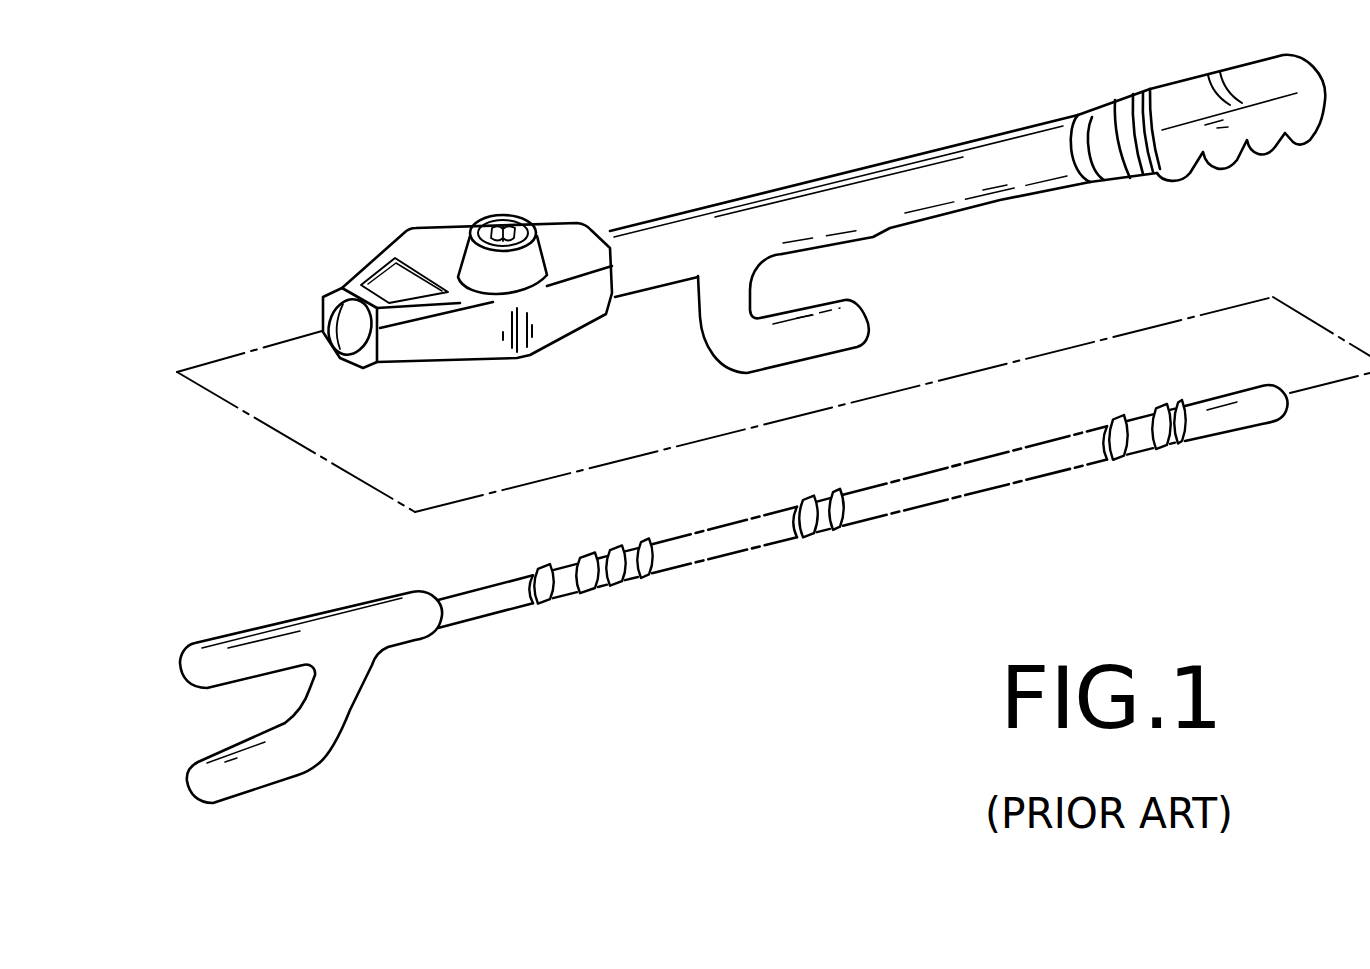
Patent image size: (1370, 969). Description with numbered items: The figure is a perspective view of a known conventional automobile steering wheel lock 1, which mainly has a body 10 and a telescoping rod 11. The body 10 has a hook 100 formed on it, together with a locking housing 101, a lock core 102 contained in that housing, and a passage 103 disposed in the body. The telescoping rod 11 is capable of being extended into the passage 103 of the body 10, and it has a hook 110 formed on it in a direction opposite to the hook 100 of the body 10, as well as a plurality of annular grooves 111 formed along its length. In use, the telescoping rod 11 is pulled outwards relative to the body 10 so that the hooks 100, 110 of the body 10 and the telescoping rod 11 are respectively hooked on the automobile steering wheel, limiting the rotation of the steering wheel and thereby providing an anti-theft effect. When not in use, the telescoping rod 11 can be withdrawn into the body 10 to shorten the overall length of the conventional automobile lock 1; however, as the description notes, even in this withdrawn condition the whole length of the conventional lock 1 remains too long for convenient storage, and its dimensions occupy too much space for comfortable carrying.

The conventional automobile lock 1 is at (697, 196).
The body 10 is at (918, 155).
The hook 100 is at (867, 317).
The locking housing 101 is at (468, 347).
The lock core 102 is at (505, 221).
The passage 103 is at (357, 327).
The telescoping rod 11 is at (505, 603).
The hook 110 is at (342, 713).
The annular grooves 111 is at (637, 567).